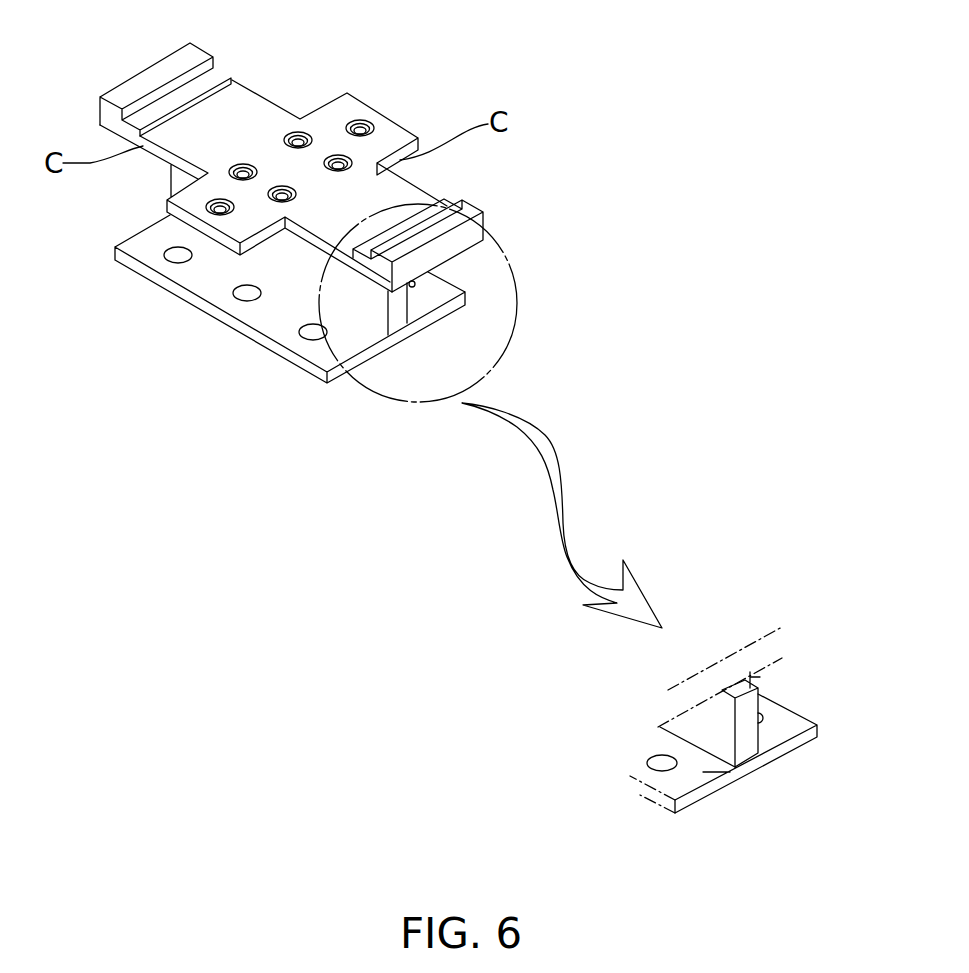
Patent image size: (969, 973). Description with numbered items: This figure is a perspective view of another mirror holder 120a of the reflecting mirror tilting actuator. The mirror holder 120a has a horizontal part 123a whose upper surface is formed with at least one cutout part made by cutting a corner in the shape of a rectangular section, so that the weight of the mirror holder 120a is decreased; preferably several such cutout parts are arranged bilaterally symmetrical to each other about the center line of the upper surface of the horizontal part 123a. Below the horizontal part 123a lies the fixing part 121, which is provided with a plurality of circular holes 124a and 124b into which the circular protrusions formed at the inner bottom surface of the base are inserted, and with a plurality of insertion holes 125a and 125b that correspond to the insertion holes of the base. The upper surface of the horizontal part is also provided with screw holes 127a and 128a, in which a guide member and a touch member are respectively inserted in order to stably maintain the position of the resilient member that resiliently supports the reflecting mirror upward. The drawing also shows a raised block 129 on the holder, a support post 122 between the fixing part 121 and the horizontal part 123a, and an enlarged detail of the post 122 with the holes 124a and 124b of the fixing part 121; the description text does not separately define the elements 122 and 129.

The mirror holder 120a is at (520, 155).
The fixing part 121 is at (747, 780).
The support post 122 is at (758, 682).
The horizontal part 123a is at (243, 100).
The circular hole 124a is at (767, 718).
The circular hole 124b is at (165, 258).
The insertion hole 125a is at (412, 286).
The insertion hole 125b is at (238, 297).
The screw hole 127a is at (360, 125).
The screw hole 128a is at (243, 170).
The guide block 129 is at (158, 92).